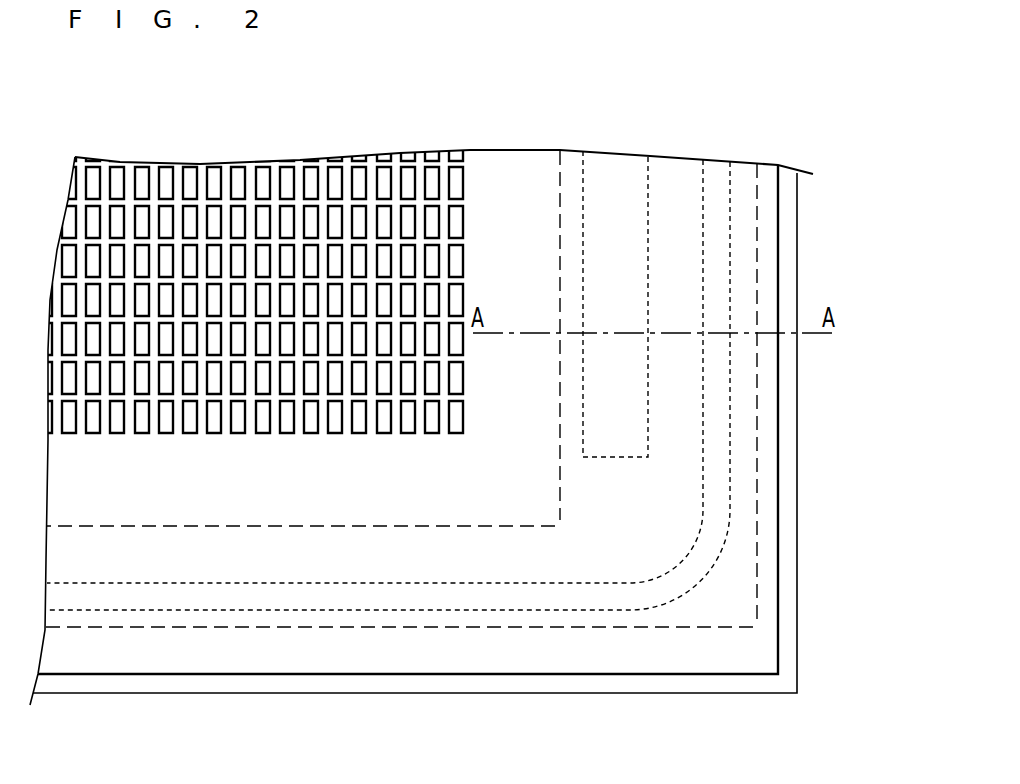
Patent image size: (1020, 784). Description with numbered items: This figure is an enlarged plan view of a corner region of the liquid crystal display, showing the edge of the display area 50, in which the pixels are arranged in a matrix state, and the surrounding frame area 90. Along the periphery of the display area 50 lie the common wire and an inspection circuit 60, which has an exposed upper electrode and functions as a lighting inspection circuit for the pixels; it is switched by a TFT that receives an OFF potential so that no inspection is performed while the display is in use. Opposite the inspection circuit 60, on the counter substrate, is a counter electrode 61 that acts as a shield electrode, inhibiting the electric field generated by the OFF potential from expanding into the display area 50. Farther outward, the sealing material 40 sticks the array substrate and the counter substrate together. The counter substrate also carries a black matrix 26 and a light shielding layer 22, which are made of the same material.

The display area 50 is at (475, 108).
The frame area 90 is at (798, 112).
The black matrix 26 is at (445, 162).
The light shielding layer 22 is at (525, 180).
The inspection circuit 60 is at (648, 215).
The counter electrode 61 is at (762, 598).
The sealing material 40 is at (730, 213).